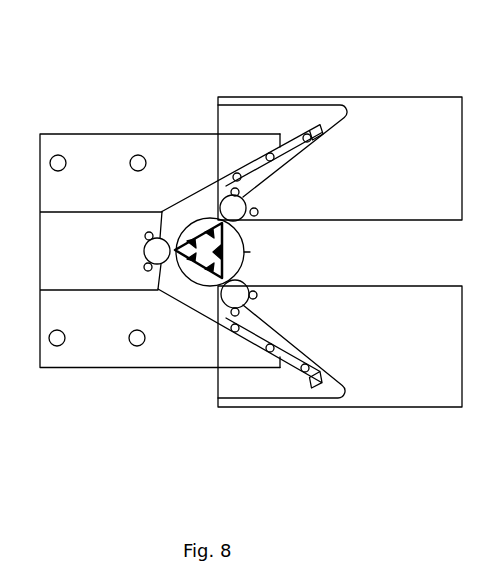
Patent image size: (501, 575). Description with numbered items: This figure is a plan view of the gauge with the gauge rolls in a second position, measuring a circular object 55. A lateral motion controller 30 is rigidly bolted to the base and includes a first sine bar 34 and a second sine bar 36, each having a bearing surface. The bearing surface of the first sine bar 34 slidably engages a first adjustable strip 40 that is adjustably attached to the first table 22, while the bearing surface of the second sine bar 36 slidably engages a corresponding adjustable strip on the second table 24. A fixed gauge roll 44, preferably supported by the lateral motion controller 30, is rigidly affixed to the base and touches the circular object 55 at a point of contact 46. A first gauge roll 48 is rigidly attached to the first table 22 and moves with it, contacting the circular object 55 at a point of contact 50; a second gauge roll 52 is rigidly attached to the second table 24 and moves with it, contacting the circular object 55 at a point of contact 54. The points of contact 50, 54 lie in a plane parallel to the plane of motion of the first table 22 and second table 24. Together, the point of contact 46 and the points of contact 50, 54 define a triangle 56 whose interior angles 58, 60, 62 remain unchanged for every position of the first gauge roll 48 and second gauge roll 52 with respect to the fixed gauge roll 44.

The first table 22 is at (409, 372).
The second table 24 is at (442, 137).
The lateral motion controller 30 is at (55, 133).
The first sine bar 34 is at (257, 368).
The second sine bar 36 is at (262, 140).
The first adjustable strip 40 is at (307, 383).
The fixed gauge roll 44 is at (146, 266).
The point of contact 46 is at (175, 250).
The first gauge roll 48 is at (221, 280).
The point of contact 50 is at (234, 308).
The second gauge roll 52 is at (345, 113).
The point of contact 54 is at (228, 218).
The circular object 55 is at (250, 252).
The triangle 56 is at (193, 264).
The interior angle 58 is at (201, 233).
The interior angle 60 is at (216, 230).
The interior angle 62 is at (180, 243).